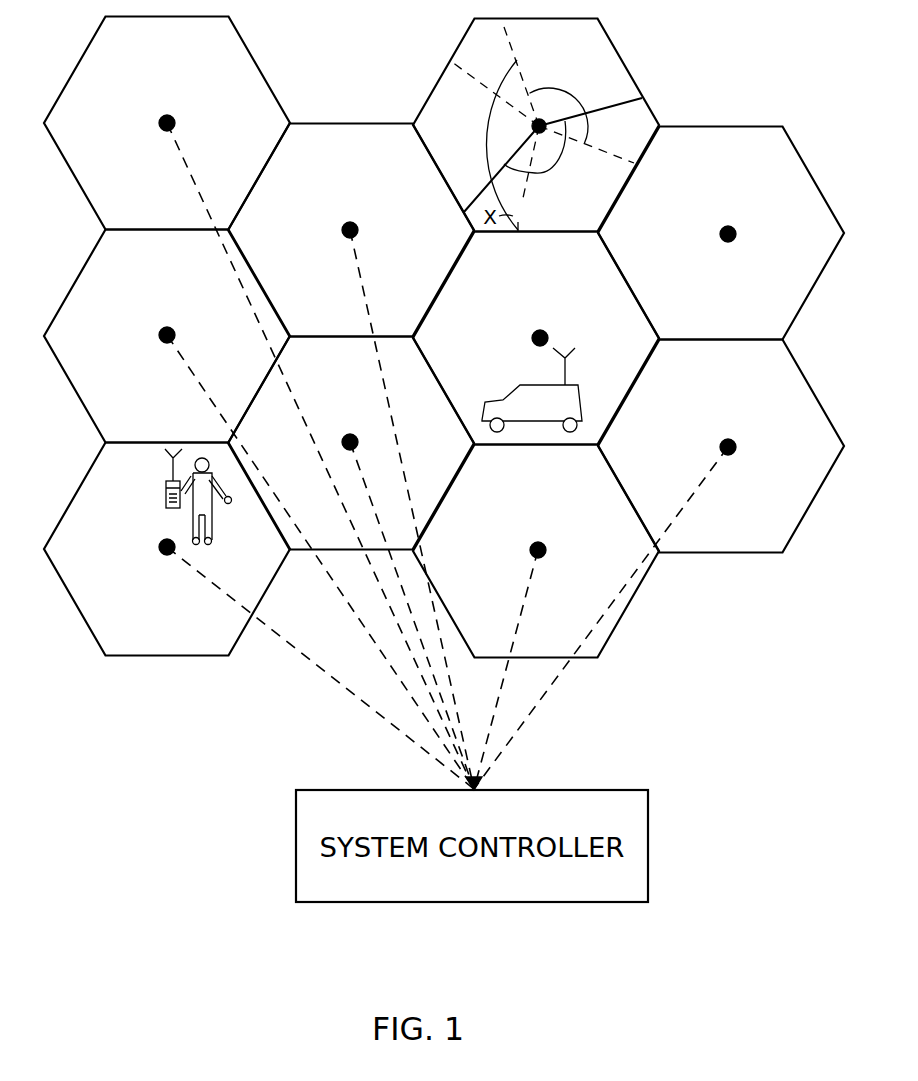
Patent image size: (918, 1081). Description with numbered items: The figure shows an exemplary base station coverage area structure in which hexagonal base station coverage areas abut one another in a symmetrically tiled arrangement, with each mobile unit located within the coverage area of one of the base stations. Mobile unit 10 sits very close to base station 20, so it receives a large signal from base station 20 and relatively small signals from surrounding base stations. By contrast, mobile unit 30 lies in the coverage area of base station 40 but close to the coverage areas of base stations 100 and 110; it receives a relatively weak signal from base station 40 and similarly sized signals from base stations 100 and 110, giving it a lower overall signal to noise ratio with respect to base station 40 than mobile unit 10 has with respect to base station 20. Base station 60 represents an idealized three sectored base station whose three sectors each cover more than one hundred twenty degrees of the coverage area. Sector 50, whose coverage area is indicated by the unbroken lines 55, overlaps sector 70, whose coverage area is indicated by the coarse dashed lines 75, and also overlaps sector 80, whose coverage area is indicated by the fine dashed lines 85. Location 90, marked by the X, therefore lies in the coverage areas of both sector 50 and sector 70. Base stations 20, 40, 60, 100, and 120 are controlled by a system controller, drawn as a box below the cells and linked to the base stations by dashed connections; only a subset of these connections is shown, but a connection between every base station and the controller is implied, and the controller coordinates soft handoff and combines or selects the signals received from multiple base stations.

The mobile unit 10 is at (521, 385).
The base station 20 is at (539, 330).
The mobile unit 30 is at (208, 544).
The base station 40 is at (166, 539).
The sector 50 is at (556, 164).
The unbroken lines 55 is at (482, 183).
The base station 60 is at (532, 128).
The sector 70 is at (488, 112).
The coarse dashed lines 75 is at (500, 27).
The sector 80 is at (575, 95).
The fine dashed lines 85 is at (459, 65).
The location 90 is at (518, 230).
The base station 100 is at (168, 329).
The base station 110 is at (349, 435).
The base station 120 is at (349, 223).